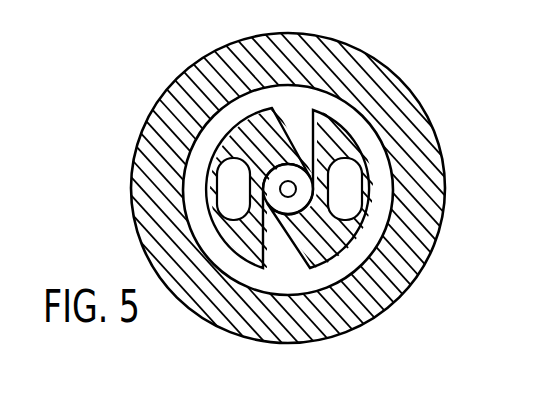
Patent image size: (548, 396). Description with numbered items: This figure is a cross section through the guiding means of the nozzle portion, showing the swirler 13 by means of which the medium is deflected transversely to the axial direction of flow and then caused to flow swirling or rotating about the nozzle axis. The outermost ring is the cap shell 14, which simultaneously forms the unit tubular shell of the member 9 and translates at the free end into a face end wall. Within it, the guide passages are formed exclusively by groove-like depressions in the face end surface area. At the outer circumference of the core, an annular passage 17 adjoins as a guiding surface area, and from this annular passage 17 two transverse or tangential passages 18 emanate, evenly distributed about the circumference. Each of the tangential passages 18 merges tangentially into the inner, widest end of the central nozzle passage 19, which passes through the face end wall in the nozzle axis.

The member 9 is at (165, 55).
The swirler 13 is at (288, 263).
The cap shell 14 is at (150, 135).
The annular passage 17 is at (363, 123).
The tangential passages 18 is at (303, 115).
The nozzle passage 19 is at (297, 207).